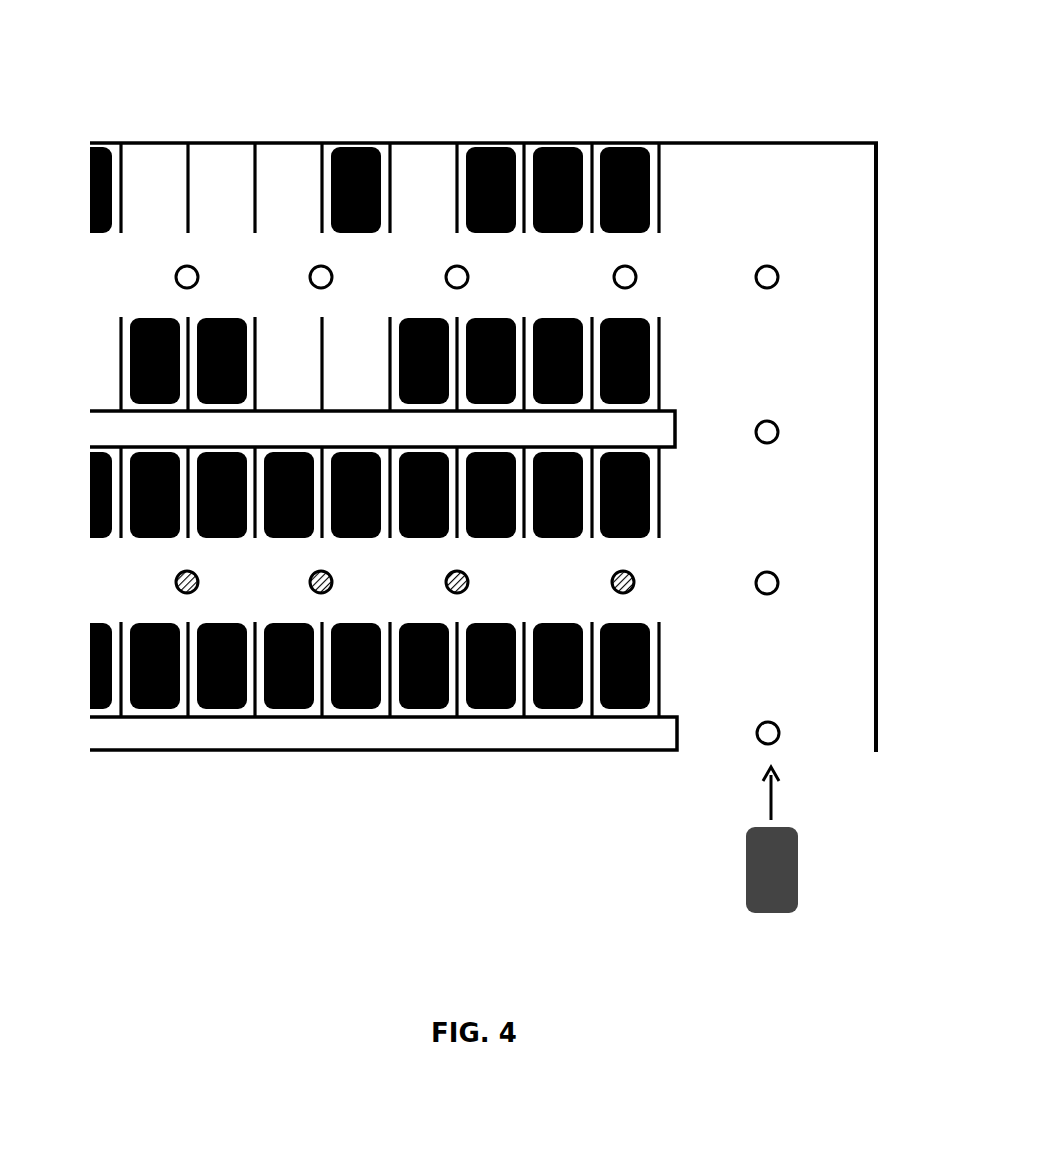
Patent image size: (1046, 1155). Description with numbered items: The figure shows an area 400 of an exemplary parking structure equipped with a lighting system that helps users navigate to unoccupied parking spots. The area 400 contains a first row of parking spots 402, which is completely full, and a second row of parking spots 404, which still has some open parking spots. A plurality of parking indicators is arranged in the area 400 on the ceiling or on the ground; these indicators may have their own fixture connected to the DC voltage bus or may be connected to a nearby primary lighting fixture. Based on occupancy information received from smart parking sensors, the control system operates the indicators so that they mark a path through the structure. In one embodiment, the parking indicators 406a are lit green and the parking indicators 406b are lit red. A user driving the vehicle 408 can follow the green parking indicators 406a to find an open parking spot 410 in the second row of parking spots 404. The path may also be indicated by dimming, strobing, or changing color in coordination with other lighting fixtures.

The area of the parking structure 400 is at (769, 57).
The first row of parking spots 402 is at (108, 591).
The second row of parking spots 404 is at (104, 278).
The parking indicators 406a is at (176, 277).
The parking indicators 406b is at (176, 582).
The vehicle 408 is at (745, 871).
The open parking spot 410 is at (423, 155).